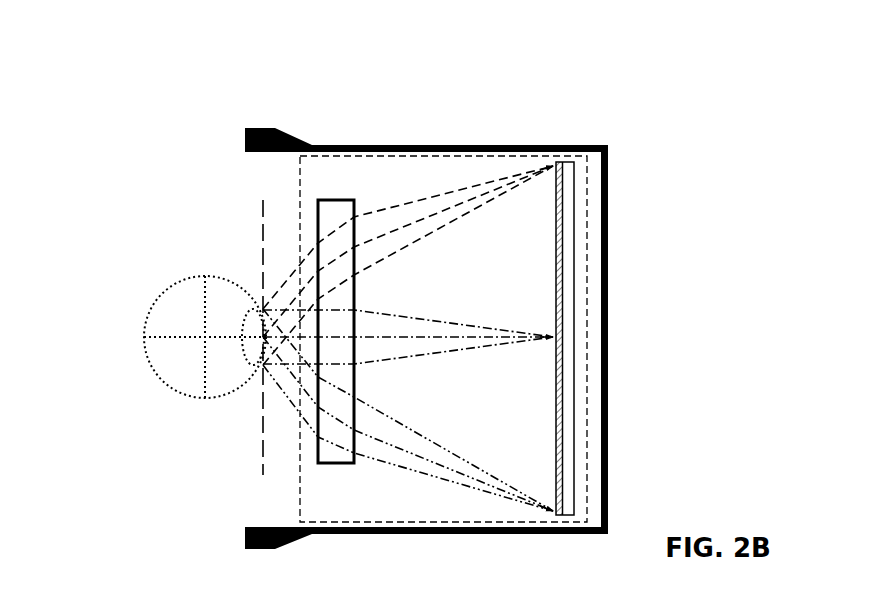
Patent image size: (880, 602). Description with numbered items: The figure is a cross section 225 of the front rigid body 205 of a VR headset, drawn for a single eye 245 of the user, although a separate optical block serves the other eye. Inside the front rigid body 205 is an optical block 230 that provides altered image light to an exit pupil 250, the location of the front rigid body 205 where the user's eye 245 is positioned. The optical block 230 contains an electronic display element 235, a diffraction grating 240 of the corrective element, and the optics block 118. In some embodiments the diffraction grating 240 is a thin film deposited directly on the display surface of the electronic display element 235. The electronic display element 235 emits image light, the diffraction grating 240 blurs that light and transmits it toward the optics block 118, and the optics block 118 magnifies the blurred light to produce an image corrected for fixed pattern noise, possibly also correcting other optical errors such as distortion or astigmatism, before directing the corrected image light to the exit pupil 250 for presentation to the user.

The cross section 225 is at (46, 41).
The front rigid body 205 is at (582, 143).
The optical block 230 is at (298, 442).
The optics block 118 is at (315, 212).
The electronic display element 235 is at (575, 263).
The diffraction grating 240 is at (553, 218).
The eye 245 is at (175, 283).
The exit pupil 250 is at (253, 457).